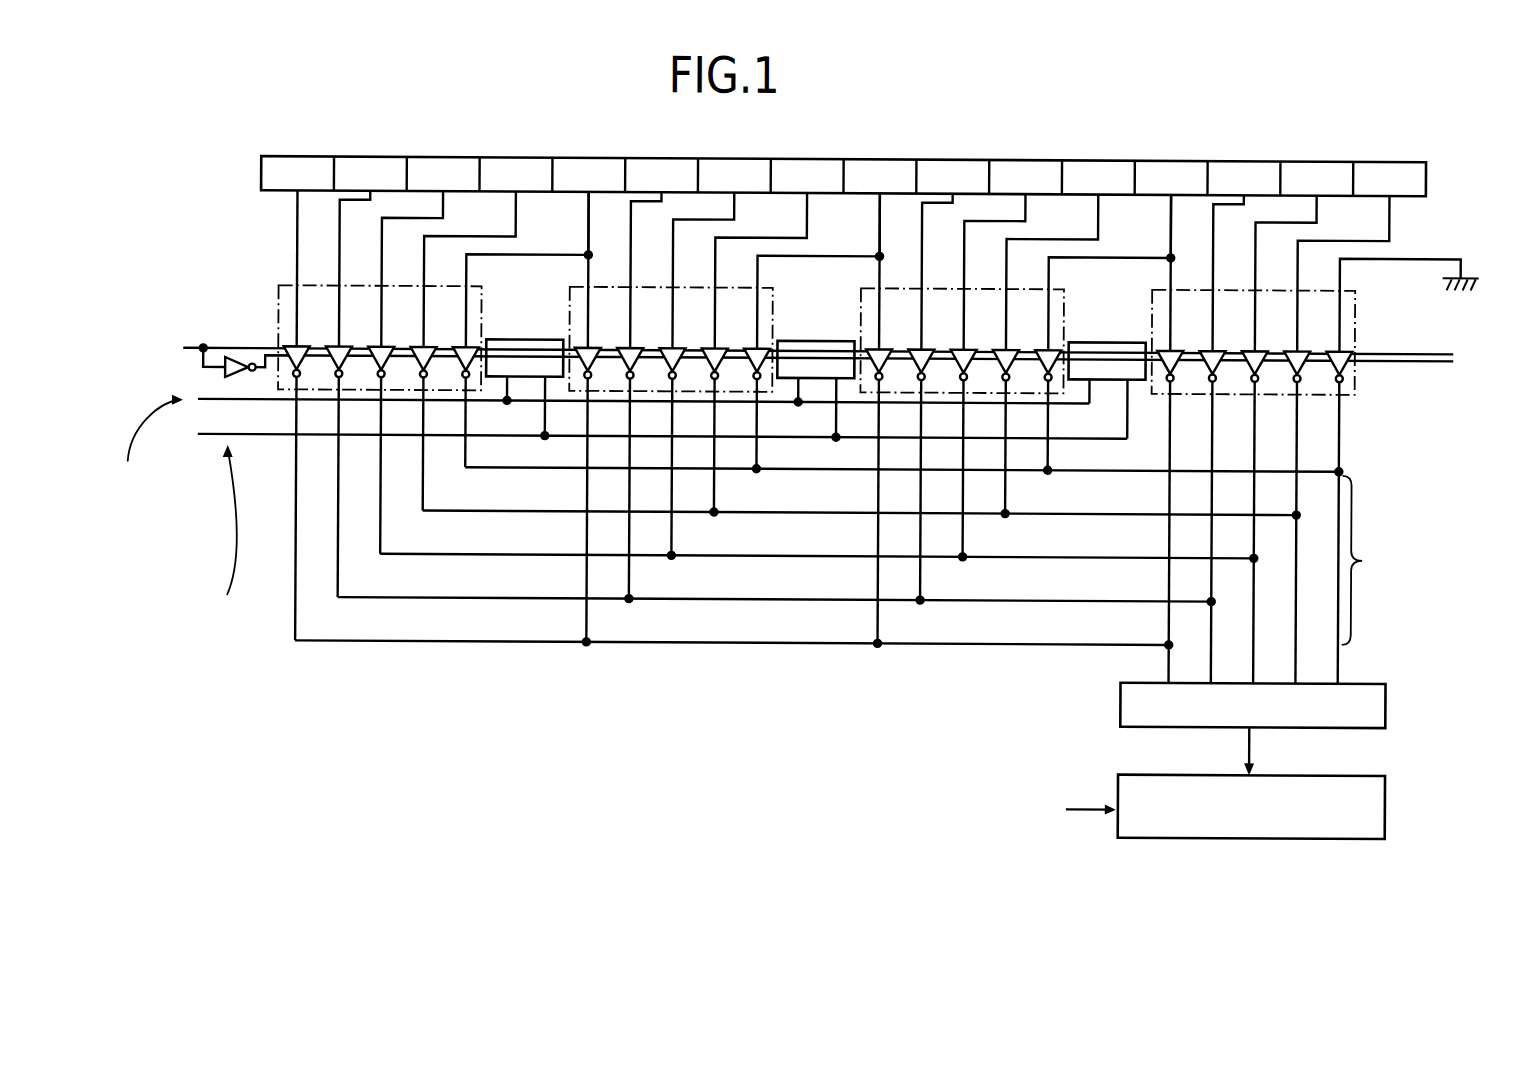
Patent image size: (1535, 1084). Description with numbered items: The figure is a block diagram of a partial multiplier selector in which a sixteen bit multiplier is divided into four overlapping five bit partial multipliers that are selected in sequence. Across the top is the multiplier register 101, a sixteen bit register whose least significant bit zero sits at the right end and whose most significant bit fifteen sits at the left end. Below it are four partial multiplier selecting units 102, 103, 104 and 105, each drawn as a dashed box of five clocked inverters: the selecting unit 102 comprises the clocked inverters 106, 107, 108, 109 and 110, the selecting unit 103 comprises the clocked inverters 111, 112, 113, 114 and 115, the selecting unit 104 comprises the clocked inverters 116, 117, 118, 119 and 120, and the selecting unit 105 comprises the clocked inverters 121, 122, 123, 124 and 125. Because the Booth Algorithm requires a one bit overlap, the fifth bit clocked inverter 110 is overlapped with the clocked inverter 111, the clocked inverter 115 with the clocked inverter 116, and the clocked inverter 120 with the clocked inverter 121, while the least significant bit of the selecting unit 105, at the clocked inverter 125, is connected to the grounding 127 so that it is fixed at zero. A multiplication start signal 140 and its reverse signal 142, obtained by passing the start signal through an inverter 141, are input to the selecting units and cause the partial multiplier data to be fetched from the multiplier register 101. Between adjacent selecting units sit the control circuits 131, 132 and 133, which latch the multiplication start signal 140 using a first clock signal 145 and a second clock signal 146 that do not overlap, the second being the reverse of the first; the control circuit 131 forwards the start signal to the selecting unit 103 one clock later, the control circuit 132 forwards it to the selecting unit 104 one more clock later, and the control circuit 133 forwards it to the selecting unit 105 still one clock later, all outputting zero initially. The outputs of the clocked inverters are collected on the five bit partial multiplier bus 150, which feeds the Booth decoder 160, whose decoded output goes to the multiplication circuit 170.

The multiplier register 101 is at (853, 158).
The partial multiplier selecting unit 102 is at (333, 287).
The partial multiplier selecting unit 103 is at (622, 288).
The partial multiplier selecting unit 104 is at (915, 288).
The partial multiplier selecting unit 105 is at (1207, 288).
The clocked inverter 106 is at (301, 349).
The clocked inverter 107 is at (344, 349).
The clocked inverter 108 is at (386, 349).
The clocked inverter 109 is at (428, 349).
The clocked inverter 110 is at (487, 349).
The clocked inverter 111 is at (593, 349).
The clocked inverter 112 is at (635, 349).
The clocked inverter 113 is at (677, 349).
The clocked inverter 114 is at (720, 349).
The clocked inverter 115 is at (778, 349).
The clocked inverter 116 is at (884, 349).
The clocked inverter 117 is at (926, 349).
The clocked inverter 118 is at (968, 349).
The clocked inverter 119 is at (1011, 349).
The clocked inverter 120 is at (1065, 349).
The clocked inverter 121 is at (1175, 349).
The clocked inverter 122 is at (1217, 349).
The clocked inverter 123 is at (1260, 349).
The clocked inverter 124 is at (1302, 349).
The clocked inverter 125 is at (1362, 349).
The grounding 127 is at (1470, 273).
The control circuit 131 is at (527, 340).
The control circuit 132 is at (818, 341).
The control circuit 133 is at (1108, 341).
The multiplication start signal 140 is at (140, 313).
The inverter 141 is at (224, 380).
The reverse signal 142 is at (250, 376).
The first clock signal 145 is at (407, 437).
The second clock signal 146 is at (353, 403).
The partial multiplier bus 150 is at (1377, 505).
The Booth decoder 160 is at (1390, 707).
The multiplication circuit 170 is at (1390, 800).